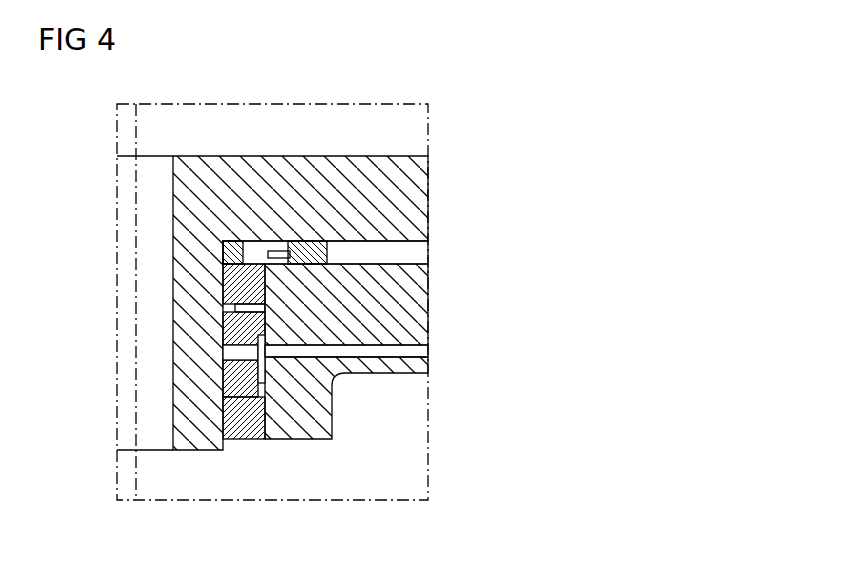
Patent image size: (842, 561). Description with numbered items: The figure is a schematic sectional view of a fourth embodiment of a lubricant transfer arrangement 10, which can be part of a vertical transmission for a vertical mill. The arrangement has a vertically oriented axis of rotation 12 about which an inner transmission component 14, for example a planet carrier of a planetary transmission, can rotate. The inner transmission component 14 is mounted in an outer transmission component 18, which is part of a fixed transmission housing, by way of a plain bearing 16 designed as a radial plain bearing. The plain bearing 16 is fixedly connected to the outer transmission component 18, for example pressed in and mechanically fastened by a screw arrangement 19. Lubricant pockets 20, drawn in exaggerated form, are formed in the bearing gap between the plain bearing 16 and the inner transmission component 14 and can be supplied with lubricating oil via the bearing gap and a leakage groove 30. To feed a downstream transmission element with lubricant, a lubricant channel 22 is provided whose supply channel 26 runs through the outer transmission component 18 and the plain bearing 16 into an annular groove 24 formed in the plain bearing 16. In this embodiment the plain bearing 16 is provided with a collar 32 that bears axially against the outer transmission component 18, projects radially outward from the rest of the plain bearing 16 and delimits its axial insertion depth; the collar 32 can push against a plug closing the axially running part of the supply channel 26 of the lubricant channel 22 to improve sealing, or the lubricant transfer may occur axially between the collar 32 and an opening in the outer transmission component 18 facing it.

The lubricant transfer arrangement 10 is at (457, 136).
The axis of rotation 12 is at (137, 147).
The inner transmission component 14 is at (375, 168).
The plain bearing 16 is at (248, 441).
The outer transmission component 18 is at (410, 293).
The screw arrangement 19 is at (284, 249).
The lubricant pockets 20 is at (230, 284).
The lubricant channel 22 is at (295, 360).
The annular groove 24 is at (235, 352).
The supply channel 26 is at (415, 352).
The leakage groove 30 is at (232, 330).
The collar 32 is at (330, 259).